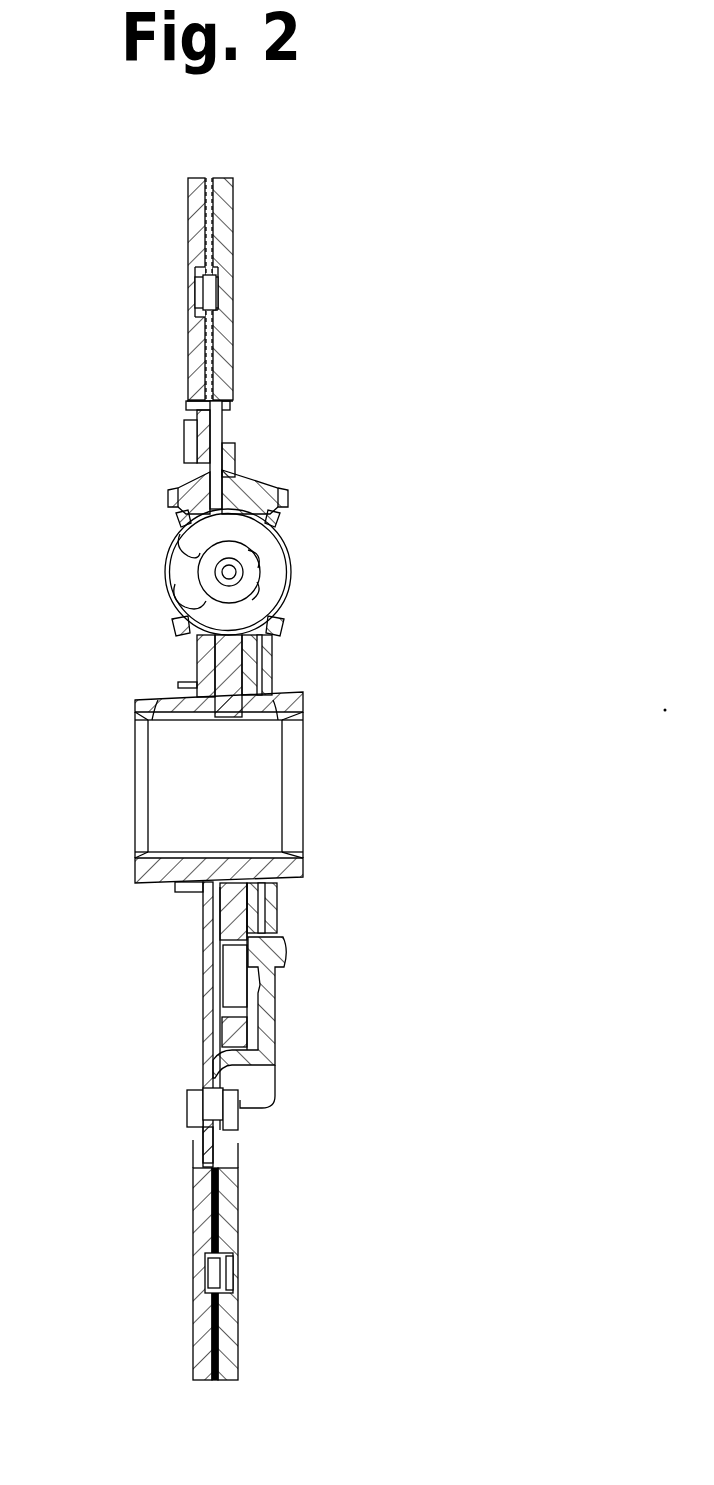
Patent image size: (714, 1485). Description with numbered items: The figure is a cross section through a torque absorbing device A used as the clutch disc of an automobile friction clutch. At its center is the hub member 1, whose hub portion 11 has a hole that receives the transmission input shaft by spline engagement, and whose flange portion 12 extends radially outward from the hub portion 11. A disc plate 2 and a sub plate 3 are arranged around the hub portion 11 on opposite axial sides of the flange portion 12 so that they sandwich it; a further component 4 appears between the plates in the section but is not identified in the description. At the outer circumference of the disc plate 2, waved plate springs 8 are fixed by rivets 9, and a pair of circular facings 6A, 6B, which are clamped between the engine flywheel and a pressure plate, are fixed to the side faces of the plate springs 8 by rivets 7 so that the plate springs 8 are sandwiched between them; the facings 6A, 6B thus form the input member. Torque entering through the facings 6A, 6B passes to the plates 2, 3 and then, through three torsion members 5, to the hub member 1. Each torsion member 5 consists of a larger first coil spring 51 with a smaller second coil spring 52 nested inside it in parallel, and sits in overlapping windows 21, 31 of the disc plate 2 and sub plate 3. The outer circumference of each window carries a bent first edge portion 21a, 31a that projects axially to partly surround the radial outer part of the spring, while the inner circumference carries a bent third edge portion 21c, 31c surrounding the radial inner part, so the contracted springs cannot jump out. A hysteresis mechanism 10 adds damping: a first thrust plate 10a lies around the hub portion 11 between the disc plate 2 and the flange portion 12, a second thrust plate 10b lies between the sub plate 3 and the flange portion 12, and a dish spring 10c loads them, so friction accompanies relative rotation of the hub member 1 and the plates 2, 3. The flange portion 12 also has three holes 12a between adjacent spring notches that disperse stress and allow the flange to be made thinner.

The hub member 1 is at (308, 702).
The disc plate 2 is at (200, 960).
The sub plate 3 is at (281, 915).
The lower clip 4 is at (231, 1115).
The torsion member 5 is at (164, 536).
The circular facing 6A is at (196, 224).
The circular facing 6B is at (223, 231).
The rivet 7 is at (219, 291).
The plate spring 8 is at (206, 352).
The rivet 9 is at (197, 428).
The nut 10 is at (258, 978).
The first thrust plate 10a is at (213, 690).
The second thrust plate 10b is at (257, 694).
The dish spring 10c is at (266, 662).
The hub portion 11 is at (168, 698).
The flange portion 12 is at (228, 652).
The hole 12a is at (230, 1004).
The window 21 is at (166, 512).
The first edge portion 21a is at (175, 488).
The third edge portion 21c is at (175, 626).
The window 31 is at (296, 515).
The first edge portion 31a is at (267, 512).
The third edge portion 31c is at (284, 629).
The first coil spring 51 is at (215, 527).
The second coil spring 52 is at (200, 573).
The torque absorbing device A is at (279, 1083).